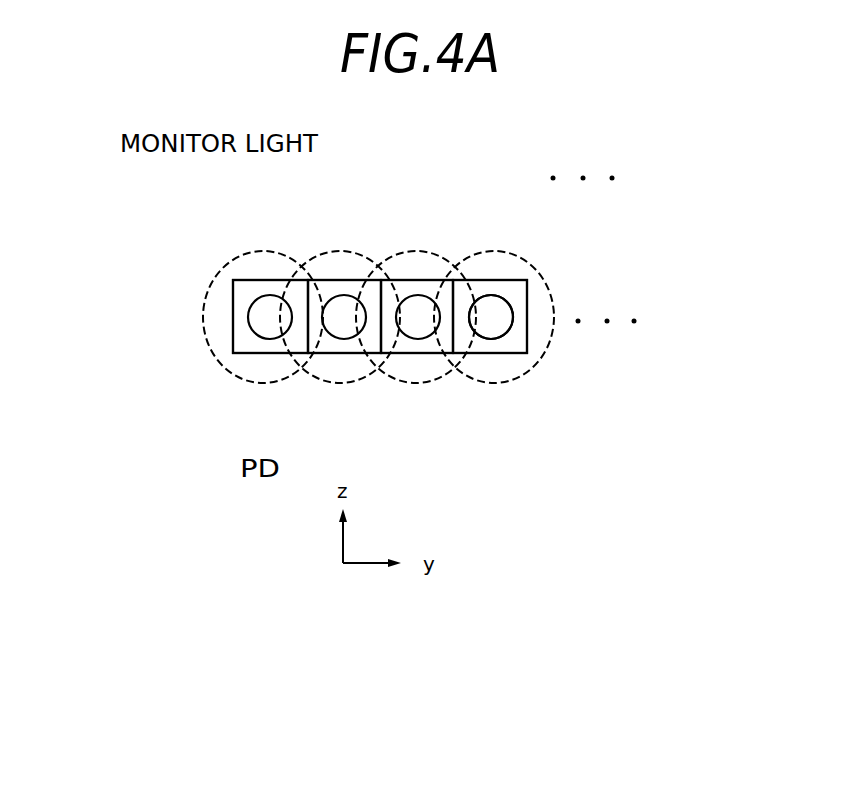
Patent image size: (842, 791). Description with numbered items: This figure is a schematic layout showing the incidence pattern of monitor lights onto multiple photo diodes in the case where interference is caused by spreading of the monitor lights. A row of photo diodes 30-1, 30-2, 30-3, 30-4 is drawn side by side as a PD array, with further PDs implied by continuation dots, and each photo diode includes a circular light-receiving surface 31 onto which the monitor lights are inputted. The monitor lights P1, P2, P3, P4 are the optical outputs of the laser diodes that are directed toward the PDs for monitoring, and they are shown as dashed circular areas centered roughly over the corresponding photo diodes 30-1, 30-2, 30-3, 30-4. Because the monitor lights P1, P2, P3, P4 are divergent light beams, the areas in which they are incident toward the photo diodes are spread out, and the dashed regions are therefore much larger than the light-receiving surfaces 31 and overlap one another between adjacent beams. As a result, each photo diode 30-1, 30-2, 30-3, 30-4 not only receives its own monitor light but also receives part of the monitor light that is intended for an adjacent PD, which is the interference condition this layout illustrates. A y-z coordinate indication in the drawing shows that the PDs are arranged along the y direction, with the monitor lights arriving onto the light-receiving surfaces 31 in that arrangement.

The photo diode 30-1 is at (250, 343).
The photo diode 30-2 is at (344, 343).
The photo diode 30-3 is at (420, 343).
The photo diode 30-4 is at (516, 343).
The light-receiving surface 31 is at (502, 318).
The monitor light P1 is at (268, 250).
The monitor light P2 is at (352, 250).
The monitor light P3 is at (430, 250).
The monitor light P4 is at (503, 250).